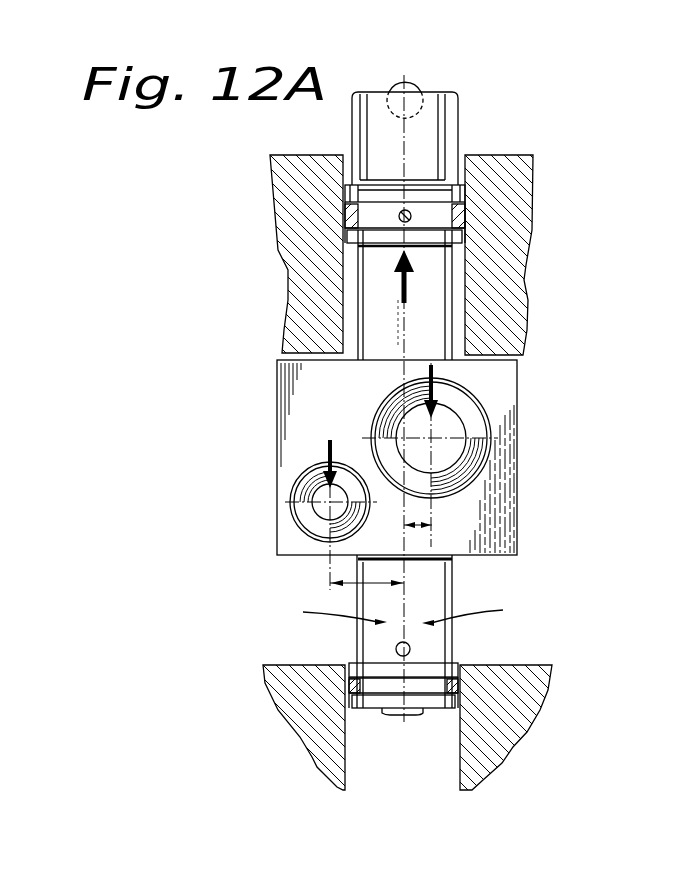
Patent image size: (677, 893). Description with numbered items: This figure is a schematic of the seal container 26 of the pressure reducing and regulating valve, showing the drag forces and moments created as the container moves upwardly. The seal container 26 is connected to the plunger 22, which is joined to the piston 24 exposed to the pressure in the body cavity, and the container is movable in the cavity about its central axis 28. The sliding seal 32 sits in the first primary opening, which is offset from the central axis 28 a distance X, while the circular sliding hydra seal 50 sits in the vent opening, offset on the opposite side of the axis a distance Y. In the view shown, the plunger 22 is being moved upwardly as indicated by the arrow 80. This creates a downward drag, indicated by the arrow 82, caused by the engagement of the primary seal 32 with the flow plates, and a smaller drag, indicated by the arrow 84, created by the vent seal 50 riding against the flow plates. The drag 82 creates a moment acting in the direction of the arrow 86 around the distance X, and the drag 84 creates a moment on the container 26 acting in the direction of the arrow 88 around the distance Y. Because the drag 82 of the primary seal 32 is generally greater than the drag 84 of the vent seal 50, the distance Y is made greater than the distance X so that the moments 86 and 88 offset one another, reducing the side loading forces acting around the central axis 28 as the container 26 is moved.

The plunger 22 is at (437, 322).
The piston 24 is at (467, 192).
The seal container 26 is at (508, 410).
The central axis 28 is at (398, 328).
The sliding seal 32 is at (485, 434).
The circular sliding hydra seal 50 is at (303, 517).
The arrow indicating upward movement 80 is at (407, 285).
The arrow indicating downward drag 82 is at (433, 373).
The arrow indicating smaller drag 84 is at (327, 450).
The arrow indicating moment 86 is at (477, 615).
The arrow indicating moment 88 is at (327, 617).
The offset distance X is at (418, 525).
The offset distance Y is at (367, 583).